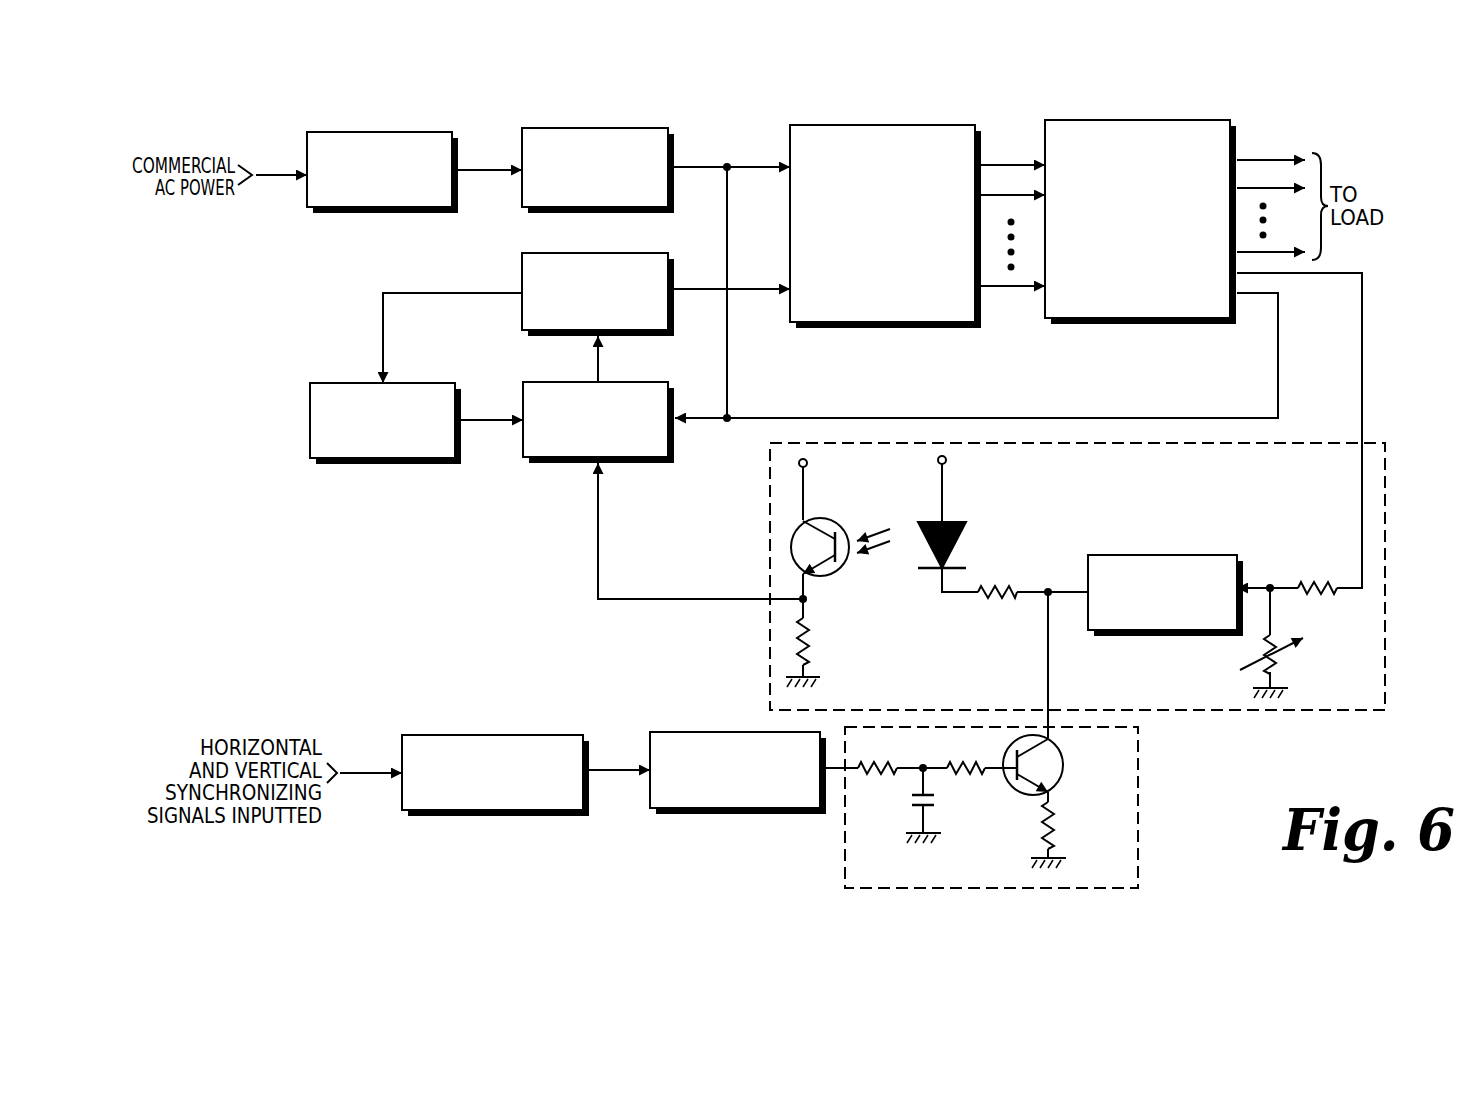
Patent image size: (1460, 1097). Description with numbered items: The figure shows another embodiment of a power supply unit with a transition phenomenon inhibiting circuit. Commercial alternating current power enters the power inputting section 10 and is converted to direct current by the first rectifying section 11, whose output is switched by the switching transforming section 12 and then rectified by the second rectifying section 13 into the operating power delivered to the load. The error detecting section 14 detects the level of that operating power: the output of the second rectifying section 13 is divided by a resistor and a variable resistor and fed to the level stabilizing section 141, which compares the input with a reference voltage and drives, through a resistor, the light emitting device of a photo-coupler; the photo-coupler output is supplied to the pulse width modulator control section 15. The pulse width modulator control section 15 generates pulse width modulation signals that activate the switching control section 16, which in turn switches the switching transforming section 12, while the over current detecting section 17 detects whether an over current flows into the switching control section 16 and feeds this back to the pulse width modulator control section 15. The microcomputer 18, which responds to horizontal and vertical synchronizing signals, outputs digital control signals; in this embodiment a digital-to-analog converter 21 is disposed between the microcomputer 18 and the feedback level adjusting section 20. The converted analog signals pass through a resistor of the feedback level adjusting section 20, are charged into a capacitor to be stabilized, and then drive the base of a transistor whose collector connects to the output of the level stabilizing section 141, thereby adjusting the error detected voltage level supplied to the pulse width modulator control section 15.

The power inputting section 10 is at (386, 132).
The first rectifying section 11 is at (617, 128).
The switching transforming section 12 is at (910, 125).
The second rectifying section 13 is at (1158, 120).
The error detecting section 14 is at (770, 662).
The level stabilizing section 141 is at (1170, 555).
The pulse width modulator (PWM) control section 15 is at (523, 394).
The switching control section 16 is at (522, 262).
The over current detecting section 17 is at (340, 383).
The microcomputer 18 is at (525, 735).
The feedback level adjusting section 20 is at (1138, 830).
The digital-to-analog converter 21 is at (700, 732).